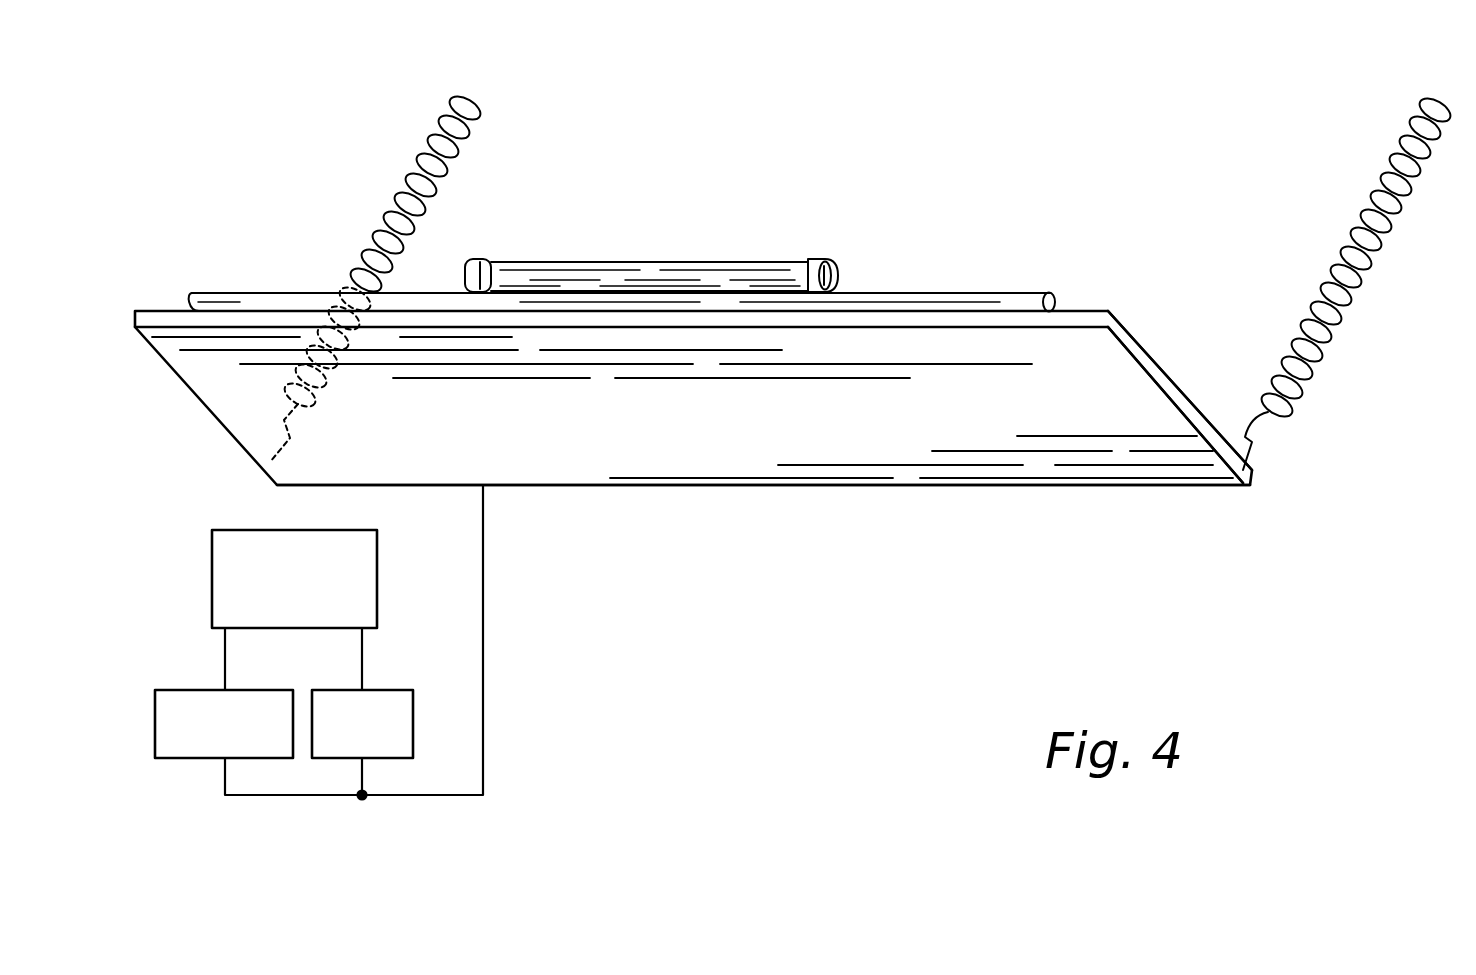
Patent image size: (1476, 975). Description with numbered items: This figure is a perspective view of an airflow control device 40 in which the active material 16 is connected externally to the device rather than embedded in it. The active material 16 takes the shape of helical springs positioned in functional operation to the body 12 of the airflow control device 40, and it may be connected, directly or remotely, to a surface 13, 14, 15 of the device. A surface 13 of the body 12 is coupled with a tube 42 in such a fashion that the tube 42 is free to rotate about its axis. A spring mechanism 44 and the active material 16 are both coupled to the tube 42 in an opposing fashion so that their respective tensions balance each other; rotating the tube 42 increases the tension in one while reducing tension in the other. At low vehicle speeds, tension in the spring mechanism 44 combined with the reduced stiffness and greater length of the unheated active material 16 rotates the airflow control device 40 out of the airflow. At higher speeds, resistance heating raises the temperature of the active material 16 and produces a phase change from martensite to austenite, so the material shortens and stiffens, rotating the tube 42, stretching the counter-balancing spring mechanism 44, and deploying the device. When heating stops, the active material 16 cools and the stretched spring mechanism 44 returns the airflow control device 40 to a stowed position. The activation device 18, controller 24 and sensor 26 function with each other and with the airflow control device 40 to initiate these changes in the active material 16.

The airflow control device 40 is at (1152, 133).
The body 12 is at (213, 415).
The surface 13 is at (1140, 342).
The surface 14 is at (1207, 417).
The surface 15 is at (668, 463).
The active material 16 is at (412, 166).
The tube 42 is at (940, 293).
The spring mechanism 44 is at (657, 268).
The controller 24 is at (212, 565).
The activation device 18 is at (196, 690).
The sensor 26 is at (390, 690).